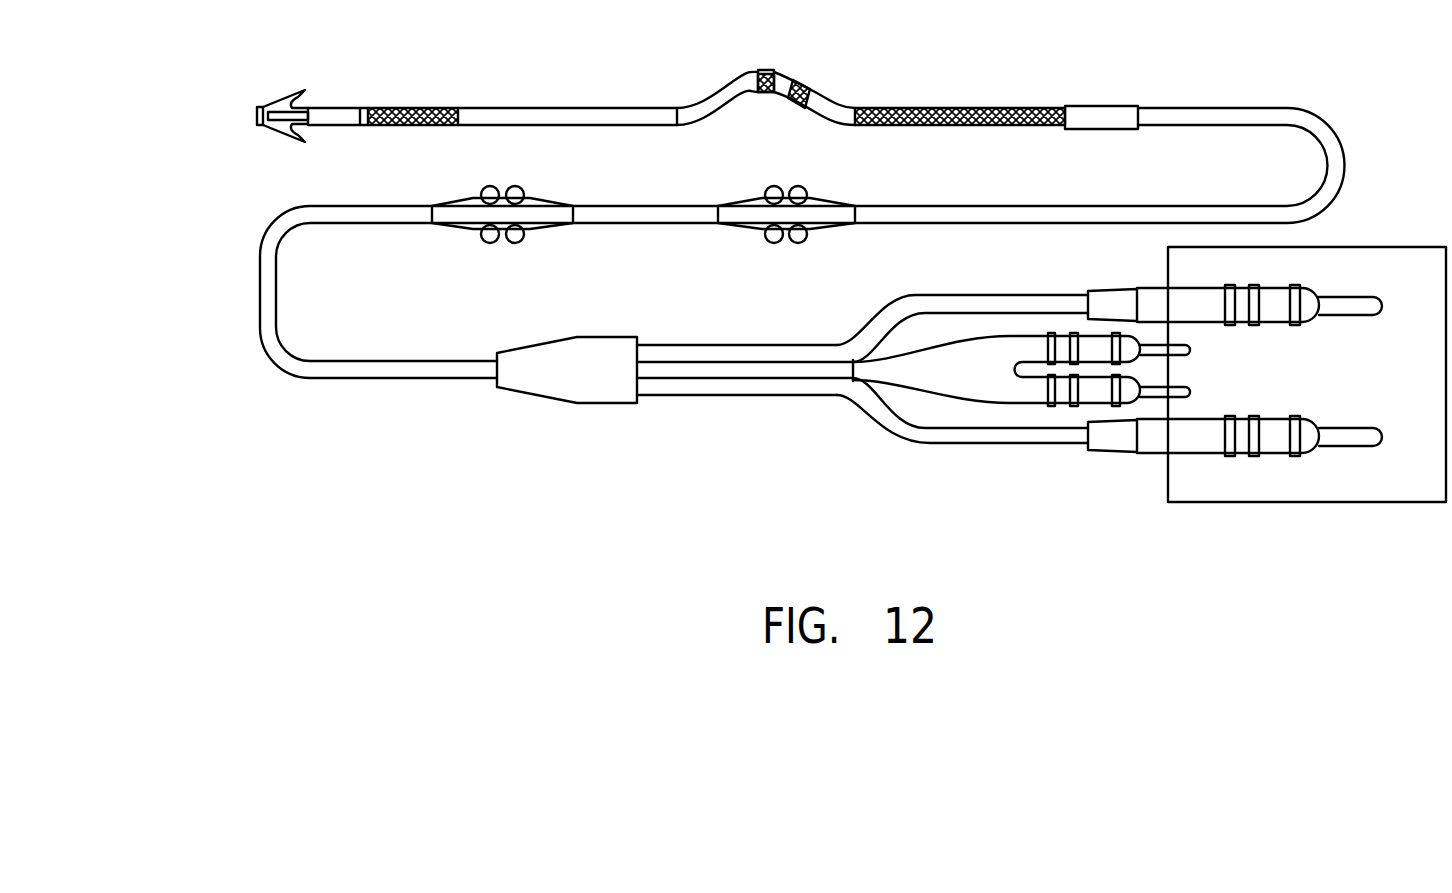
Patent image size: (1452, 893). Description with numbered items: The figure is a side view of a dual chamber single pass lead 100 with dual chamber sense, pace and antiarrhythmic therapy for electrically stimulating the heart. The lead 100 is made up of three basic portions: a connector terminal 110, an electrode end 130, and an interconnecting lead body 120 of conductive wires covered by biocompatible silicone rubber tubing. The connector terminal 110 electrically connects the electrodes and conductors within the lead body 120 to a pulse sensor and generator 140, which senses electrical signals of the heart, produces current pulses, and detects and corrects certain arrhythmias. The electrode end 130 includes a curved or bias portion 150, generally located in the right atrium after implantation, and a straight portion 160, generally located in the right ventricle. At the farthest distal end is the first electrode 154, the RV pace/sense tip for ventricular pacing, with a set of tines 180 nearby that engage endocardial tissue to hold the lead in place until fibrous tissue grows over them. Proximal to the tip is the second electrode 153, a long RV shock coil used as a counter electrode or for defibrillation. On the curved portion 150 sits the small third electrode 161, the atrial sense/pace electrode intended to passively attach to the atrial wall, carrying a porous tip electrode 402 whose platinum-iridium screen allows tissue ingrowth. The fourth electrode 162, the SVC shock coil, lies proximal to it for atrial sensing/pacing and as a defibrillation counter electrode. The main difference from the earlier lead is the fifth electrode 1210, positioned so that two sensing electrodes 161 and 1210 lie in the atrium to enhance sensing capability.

The lead 100 is at (402, 557).
The connector terminal 110 is at (933, 437).
The lead body 120 is at (1363, 167).
The electrode end 130 is at (513, 108).
The pulse sensor and generator 140 is at (1235, 492).
The curved or bias portion 150 is at (835, 102).
The second electrode 153 is at (383, 108).
The first electrode 154 is at (258, 112).
The straight portion 160 is at (430, 127).
The third electrode 161 is at (768, 70).
The fourth electrode 162 is at (960, 108).
The tines 180 is at (307, 90).
The porous tip electrode 402 is at (758, 72).
The electrode 1210 is at (805, 83).